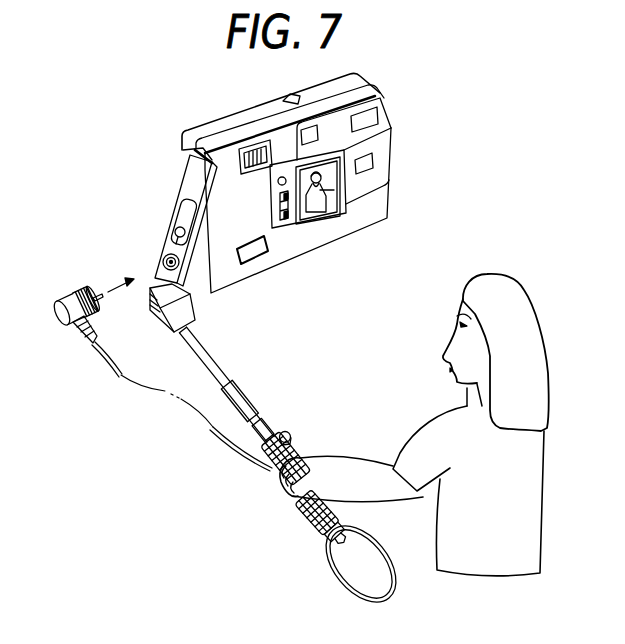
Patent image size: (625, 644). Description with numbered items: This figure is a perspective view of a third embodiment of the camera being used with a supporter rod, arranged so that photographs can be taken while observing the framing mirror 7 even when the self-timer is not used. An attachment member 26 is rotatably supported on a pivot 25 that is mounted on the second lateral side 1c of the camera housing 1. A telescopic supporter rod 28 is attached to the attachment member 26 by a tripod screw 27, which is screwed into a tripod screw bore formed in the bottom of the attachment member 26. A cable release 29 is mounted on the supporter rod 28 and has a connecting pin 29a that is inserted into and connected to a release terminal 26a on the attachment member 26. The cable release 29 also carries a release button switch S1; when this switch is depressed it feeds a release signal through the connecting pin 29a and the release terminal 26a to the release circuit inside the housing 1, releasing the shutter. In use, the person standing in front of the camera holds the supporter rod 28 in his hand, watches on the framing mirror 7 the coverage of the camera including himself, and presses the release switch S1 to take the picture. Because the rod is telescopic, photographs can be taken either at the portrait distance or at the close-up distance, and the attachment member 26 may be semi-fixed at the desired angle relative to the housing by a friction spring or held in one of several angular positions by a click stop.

The camera housing 1 is at (221, 105).
The second lateral side 1c is at (178, 154).
The framing mirror 7 is at (304, 200).
The pivot 25 is at (162, 258).
The attachment member 26 is at (190, 154).
The release terminal 26a is at (185, 182).
The tripod screw 27 is at (158, 310).
The telescopic supporter rod 28 is at (222, 366).
The cable release 29 is at (74, 298).
The connecting pin 29a is at (99, 293).
The release button switch S1 is at (287, 432).